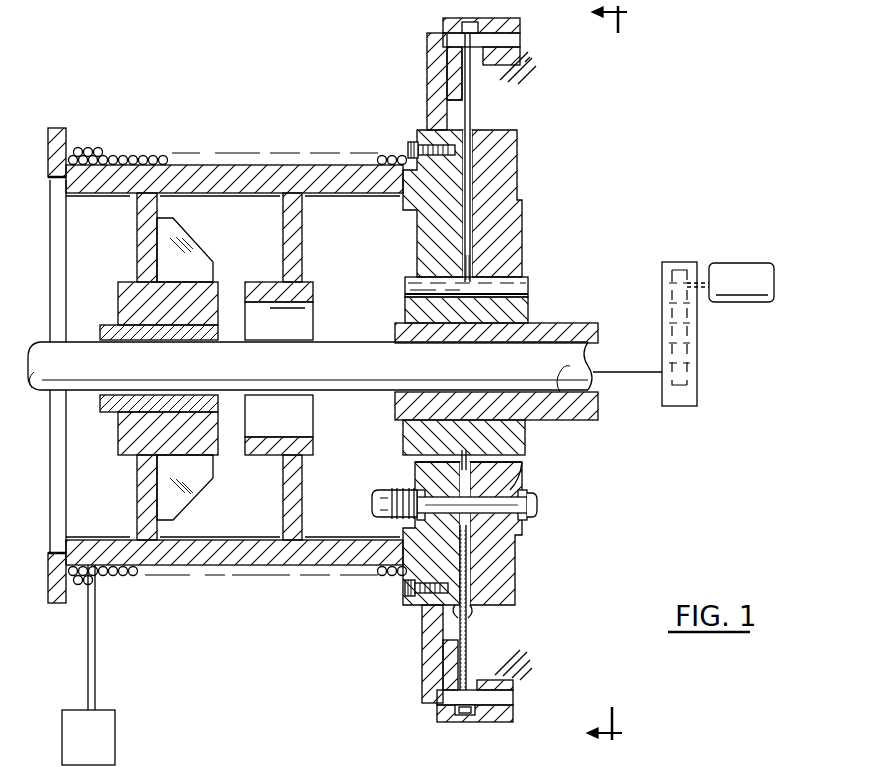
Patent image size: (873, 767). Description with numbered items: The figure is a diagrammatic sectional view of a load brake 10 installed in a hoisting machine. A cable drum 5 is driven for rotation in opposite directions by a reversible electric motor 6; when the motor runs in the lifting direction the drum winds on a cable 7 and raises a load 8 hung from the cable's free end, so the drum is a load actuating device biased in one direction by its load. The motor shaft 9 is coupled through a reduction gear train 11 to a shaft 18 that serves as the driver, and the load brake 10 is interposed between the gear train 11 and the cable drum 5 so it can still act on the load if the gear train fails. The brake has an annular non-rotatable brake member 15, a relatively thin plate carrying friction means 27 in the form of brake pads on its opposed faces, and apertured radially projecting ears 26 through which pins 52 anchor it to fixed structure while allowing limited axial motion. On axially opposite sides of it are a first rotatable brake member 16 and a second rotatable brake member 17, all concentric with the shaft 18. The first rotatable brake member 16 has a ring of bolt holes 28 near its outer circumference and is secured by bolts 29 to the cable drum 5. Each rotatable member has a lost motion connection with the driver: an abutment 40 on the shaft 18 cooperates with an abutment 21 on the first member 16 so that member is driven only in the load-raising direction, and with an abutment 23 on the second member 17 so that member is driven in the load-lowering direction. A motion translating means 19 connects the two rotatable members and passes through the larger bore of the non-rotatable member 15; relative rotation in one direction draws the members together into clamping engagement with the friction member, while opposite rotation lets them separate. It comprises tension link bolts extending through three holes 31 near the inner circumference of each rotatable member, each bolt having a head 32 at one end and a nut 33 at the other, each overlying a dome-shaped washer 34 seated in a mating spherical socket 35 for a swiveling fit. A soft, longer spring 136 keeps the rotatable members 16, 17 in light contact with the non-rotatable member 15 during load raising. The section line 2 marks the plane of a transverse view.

The section line 2- 2 is at (597, 384).
The cable drum 5 is at (222, 172).
The motor 6 is at (739, 268).
The cable 7 is at (138, 573).
The load 8 is at (116, 745).
The motor shaft 9 is at (700, 282).
The load brake 10 is at (477, 370).
The reduction gear train 11 is at (700, 346).
The non-rotatable brake member 15 is at (482, 636).
The first rotatable brake member 16 is at (415, 221).
The second rotatable brake member 17 is at (530, 212).
The shaft 18 is at (540, 322).
The motion translating means 19 is at (486, 589).
The abutment 21 is at (420, 285).
The abutment 23 is at (515, 276).
The ears 26 is at (465, 718).
The friction means 27 is at (462, 612).
The bolt holes 28 is at (437, 140).
The bolts 29 is at (412, 150).
The holes 31 is at (496, 515).
The head 32 is at (535, 500).
The nut 33 is at (395, 490).
The dome-shaped washer 34 is at (421, 521).
The spherical socket 35 is at (518, 482).
The abutment 40 is at (528, 290).
The pins 52 is at (510, 42).
The spring 136 is at (408, 490).